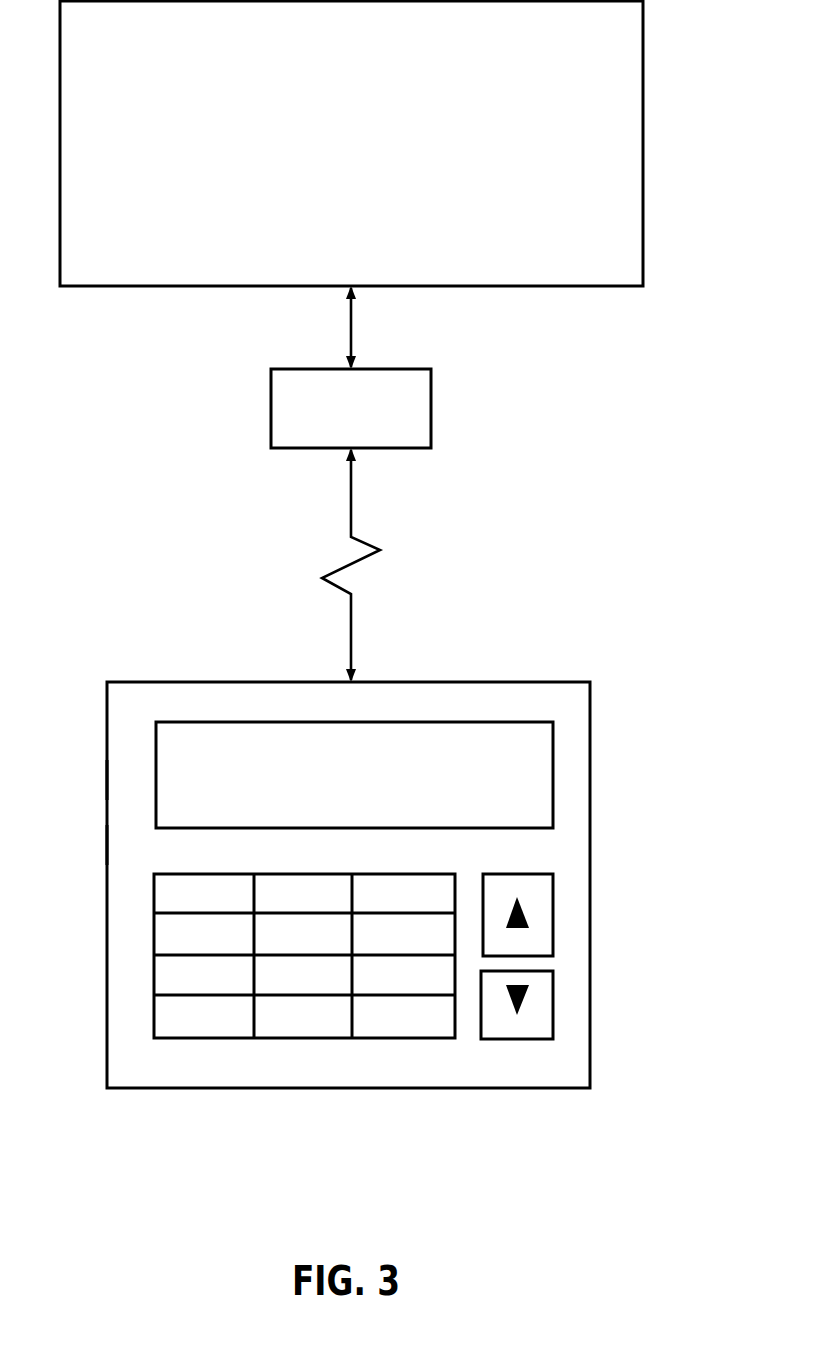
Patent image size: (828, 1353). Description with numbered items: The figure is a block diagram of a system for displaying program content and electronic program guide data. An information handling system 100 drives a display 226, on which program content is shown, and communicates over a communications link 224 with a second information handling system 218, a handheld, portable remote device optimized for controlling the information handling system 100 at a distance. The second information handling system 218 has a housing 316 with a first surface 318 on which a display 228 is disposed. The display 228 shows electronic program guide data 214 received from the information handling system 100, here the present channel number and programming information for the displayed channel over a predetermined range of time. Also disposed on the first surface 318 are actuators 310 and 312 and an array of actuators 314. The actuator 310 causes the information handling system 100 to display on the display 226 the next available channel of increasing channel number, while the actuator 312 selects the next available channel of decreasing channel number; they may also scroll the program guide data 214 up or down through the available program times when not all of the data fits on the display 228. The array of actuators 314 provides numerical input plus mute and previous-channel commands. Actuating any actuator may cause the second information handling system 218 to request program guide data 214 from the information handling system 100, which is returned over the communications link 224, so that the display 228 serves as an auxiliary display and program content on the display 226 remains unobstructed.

The display 226 is at (643, 71).
The information handling system 100 is at (431, 386).
The communications link 224 is at (351, 517).
The second information handling system 218 is at (590, 782).
The display 228 is at (553, 746).
The electronic program guide data 214 is at (436, 742).
The housing 316 is at (107, 782).
The first surface 318 is at (112, 847).
The array of actuators 314 is at (154, 913).
The actuator 310 is at (553, 893).
The actuator 312 is at (553, 985).